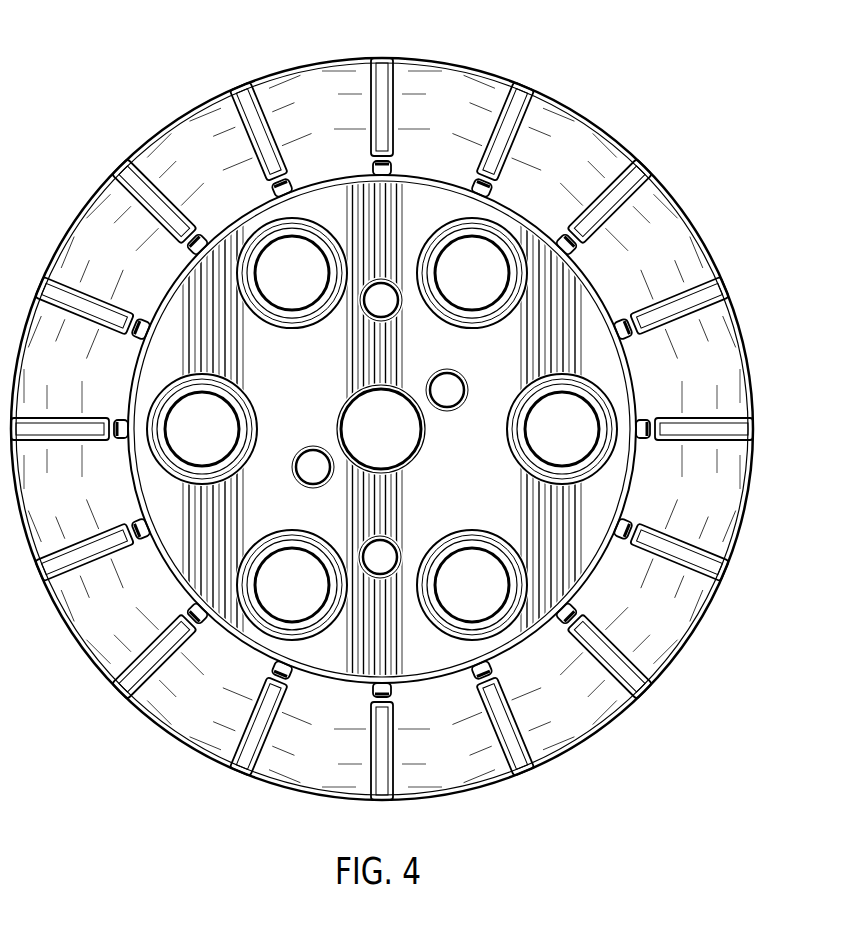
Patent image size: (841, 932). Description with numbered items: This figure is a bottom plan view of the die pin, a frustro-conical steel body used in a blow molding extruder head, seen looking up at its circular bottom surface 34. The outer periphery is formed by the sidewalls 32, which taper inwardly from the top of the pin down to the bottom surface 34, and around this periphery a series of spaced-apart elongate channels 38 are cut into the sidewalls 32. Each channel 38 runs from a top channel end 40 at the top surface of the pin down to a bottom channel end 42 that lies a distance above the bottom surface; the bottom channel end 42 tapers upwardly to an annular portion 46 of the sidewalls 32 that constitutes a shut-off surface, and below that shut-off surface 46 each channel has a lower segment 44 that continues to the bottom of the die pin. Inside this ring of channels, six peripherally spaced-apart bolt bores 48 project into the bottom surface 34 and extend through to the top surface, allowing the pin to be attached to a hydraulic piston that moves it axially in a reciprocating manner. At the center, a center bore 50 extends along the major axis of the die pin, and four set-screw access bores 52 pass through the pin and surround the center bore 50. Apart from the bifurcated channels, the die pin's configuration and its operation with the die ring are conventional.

The sidewalls 32 is at (717, 386).
The circular bottom surface 34 is at (583, 337).
The elongate channels 38 is at (383, 750).
The top channel end 40 is at (265, 675).
The bottom channel end 42 is at (273, 688).
The lower segment 44 is at (268, 663).
The annular portion (shut-off surface) 46 is at (297, 678).
The bolt bores 48 is at (192, 437).
The center bore 50 is at (380, 427).
The small holes 52 is at (448, 388).